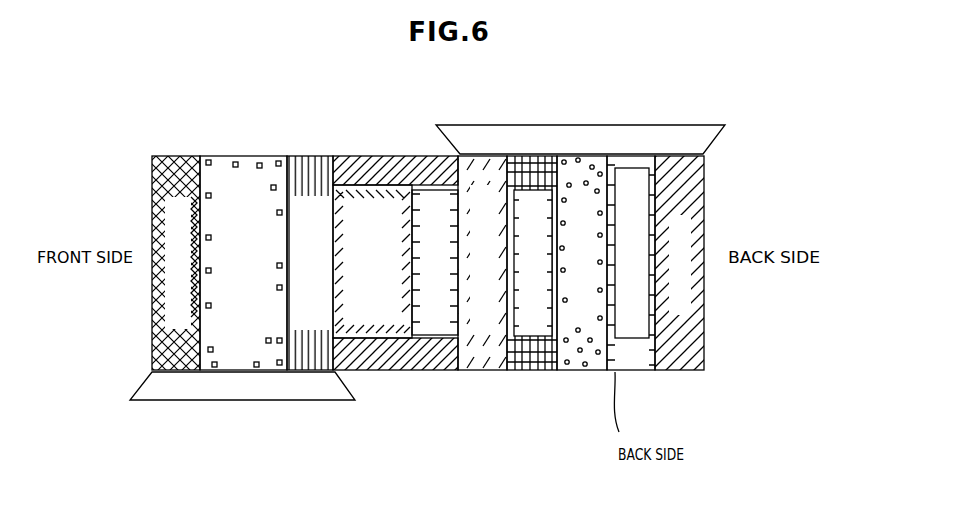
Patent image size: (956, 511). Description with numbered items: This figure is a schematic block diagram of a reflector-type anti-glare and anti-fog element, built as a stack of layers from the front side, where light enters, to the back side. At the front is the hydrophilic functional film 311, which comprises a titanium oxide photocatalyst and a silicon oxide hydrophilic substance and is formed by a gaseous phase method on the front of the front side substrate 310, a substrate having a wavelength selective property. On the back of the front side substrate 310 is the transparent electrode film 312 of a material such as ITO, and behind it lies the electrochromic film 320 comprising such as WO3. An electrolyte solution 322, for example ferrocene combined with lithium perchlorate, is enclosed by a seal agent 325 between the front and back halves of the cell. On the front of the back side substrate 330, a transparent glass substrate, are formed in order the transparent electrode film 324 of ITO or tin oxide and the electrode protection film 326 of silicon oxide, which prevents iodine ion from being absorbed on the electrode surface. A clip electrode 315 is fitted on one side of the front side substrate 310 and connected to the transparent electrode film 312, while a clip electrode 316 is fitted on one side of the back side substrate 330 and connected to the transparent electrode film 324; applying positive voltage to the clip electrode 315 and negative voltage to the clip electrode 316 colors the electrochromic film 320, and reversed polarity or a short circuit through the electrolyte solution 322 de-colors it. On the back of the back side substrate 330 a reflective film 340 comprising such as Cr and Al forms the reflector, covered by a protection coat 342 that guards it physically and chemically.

The front side substrate 310 is at (243, 372).
The hydrophilic functional film 311 is at (185, 372).
The transparent electrode film 312 is at (305, 372).
The clip electrode 315 is at (150, 393).
The clip electrode 316 is at (694, 140).
The electrochromic film 320 is at (368, 185).
The electrolyte solution 322 is at (430, 183).
The transparent electrode film 324 is at (530, 372).
The seal agent 325 is at (401, 372).
The electrode protection film 326 is at (487, 372).
The back side substrate 330 is at (580, 372).
The reflective film 340 is at (638, 372).
The protection coat 342 is at (680, 372).